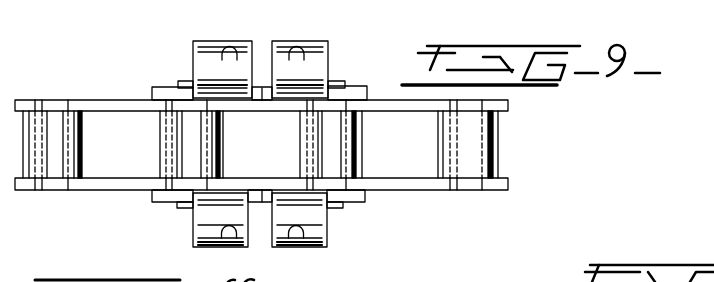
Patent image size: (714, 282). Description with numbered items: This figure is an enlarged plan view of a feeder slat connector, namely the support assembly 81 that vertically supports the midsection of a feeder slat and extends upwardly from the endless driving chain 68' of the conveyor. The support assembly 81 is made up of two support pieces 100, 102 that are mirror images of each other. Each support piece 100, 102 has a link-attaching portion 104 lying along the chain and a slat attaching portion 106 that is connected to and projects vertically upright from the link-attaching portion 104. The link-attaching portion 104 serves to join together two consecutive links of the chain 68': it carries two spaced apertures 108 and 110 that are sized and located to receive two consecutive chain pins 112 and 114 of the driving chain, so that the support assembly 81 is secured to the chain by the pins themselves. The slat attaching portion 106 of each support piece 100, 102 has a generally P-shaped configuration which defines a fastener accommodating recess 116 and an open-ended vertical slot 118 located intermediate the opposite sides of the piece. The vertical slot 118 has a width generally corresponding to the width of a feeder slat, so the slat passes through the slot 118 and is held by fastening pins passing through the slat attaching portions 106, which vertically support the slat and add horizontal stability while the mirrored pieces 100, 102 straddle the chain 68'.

The endless chain 68' is at (261, 113).
The support assembly 81 is at (147, 79).
The support piece 100 is at (333, 42).
The support piece 102 is at (336, 233).
The link-attaching portion 104 is at (363, 85).
The slat attaching portion 106 is at (200, 218).
The aperture 108 is at (184, 104).
The aperture 110 is at (352, 150).
The chain pin 112 is at (187, 81).
The chain pin 114 is at (333, 82).
The fastener accommodating recess 116 is at (296, 47).
The vertical slot 118 is at (262, 80).